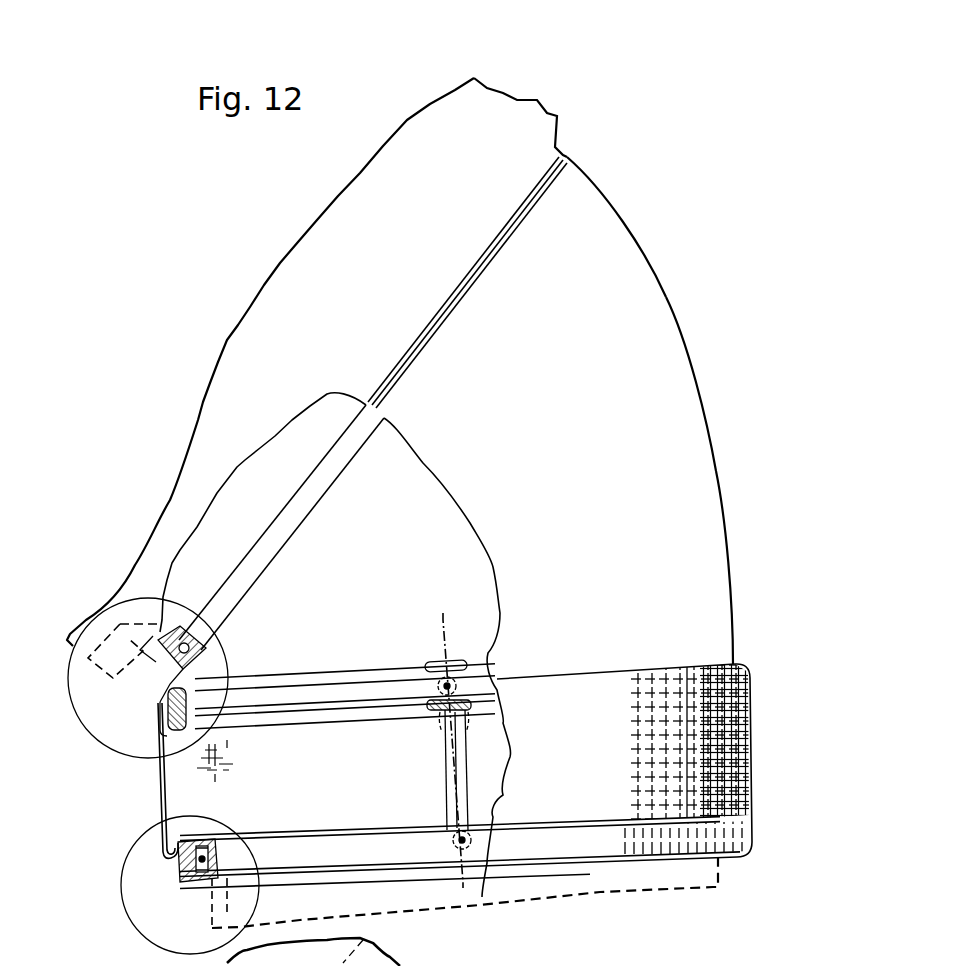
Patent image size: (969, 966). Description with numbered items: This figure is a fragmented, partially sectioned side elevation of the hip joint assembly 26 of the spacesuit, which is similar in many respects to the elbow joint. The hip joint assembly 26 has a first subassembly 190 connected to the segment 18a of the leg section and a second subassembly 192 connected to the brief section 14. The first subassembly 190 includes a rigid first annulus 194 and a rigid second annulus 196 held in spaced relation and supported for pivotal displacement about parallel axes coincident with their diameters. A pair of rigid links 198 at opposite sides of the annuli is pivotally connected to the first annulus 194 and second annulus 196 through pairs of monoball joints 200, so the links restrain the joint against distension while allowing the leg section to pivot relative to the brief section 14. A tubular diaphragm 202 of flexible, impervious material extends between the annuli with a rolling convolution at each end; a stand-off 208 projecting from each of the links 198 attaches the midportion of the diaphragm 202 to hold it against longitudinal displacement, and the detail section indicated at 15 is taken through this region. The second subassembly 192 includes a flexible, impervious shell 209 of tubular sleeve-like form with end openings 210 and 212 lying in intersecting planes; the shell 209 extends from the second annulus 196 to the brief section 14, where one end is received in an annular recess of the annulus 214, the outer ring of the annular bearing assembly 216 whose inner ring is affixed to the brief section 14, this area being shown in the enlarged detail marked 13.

The brief section 14 is at (500, 138).
The second subassembly 192 is at (593, 241).
The hip joint assembly 26 is at (725, 424).
The shell 209 is at (705, 527).
The end opening 210 is at (288, 493).
The end opening 212 is at (303, 685).
The second annulus 196 is at (342, 700).
The rigid links 198 is at (446, 750).
The stand-off 208 is at (452, 775).
The monoball joints 200 is at (459, 688).
The section line 15 is at (443, 613).
The diaphragm 202 is at (755, 728).
The first subassembly 190 is at (190, 786).
The annular bearing assembly 216 is at (193, 672).
The annulus 214 is at (157, 662).
The detail circle 13 is at (70, 695).
The first annulus 194 is at (190, 845).
The segment 18a is at (724, 884).